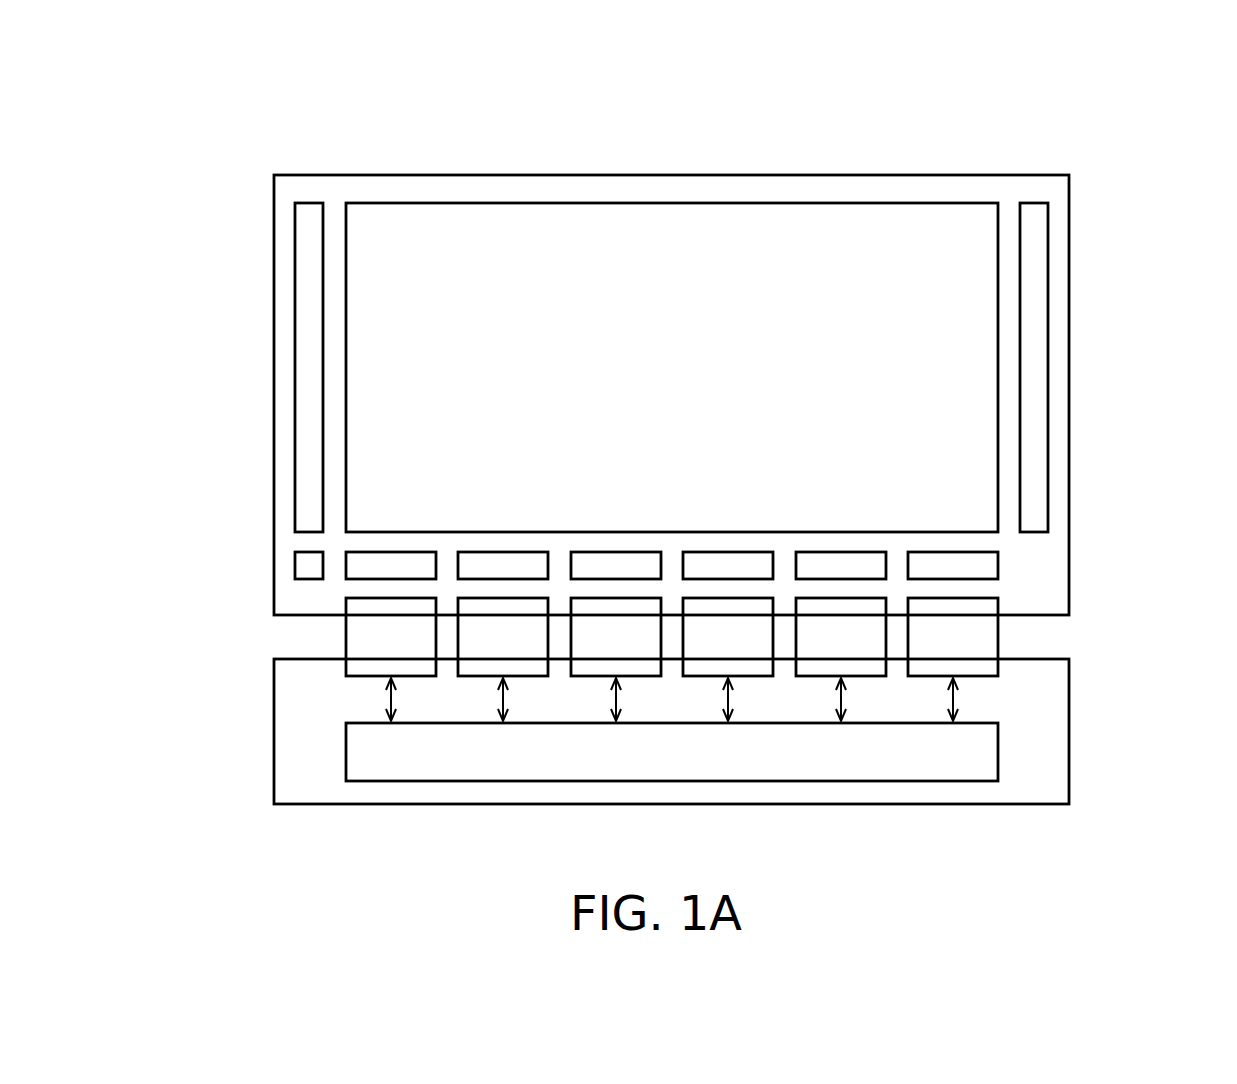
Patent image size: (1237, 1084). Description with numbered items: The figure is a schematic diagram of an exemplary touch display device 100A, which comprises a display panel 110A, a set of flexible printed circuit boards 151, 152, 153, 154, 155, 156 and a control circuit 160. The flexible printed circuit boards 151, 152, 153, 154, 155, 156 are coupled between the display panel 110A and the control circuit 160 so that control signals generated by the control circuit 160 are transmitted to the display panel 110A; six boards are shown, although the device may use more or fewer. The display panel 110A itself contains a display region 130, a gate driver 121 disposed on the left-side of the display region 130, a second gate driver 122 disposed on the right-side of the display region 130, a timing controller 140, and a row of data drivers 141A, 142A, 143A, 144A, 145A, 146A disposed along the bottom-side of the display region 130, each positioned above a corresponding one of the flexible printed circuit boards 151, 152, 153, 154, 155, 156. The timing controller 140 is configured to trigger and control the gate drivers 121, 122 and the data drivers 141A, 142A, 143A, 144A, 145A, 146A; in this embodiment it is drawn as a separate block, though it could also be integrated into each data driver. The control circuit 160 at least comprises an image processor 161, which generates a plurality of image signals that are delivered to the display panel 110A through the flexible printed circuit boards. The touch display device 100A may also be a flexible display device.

The touch display device 100A is at (1220, 98).
The display panel 110A is at (671, 175).
The gate driver 121 is at (300, 367).
The gate driver 122 is at (1040, 369).
The display region 130 is at (697, 391).
The timing controller 140 is at (305, 568).
The data driver 141A is at (392, 568).
The data driver 142A is at (504, 568).
The data driver 143A is at (617, 568).
The data driver 144A is at (729, 568).
The data driver 145A is at (842, 568).
The data driver 146A is at (954, 568).
The flexible printed circuit board 151 is at (415, 655).
The flexible printed circuit board 152 is at (527, 655).
The flexible printed circuit board 153 is at (640, 655).
The flexible printed circuit board 154 is at (752, 655).
The flexible printed circuit board 155 is at (865, 655).
The flexible printed circuit board 156 is at (977, 655).
The control circuit 160 is at (1038, 748).
The image processor 161 is at (697, 765).